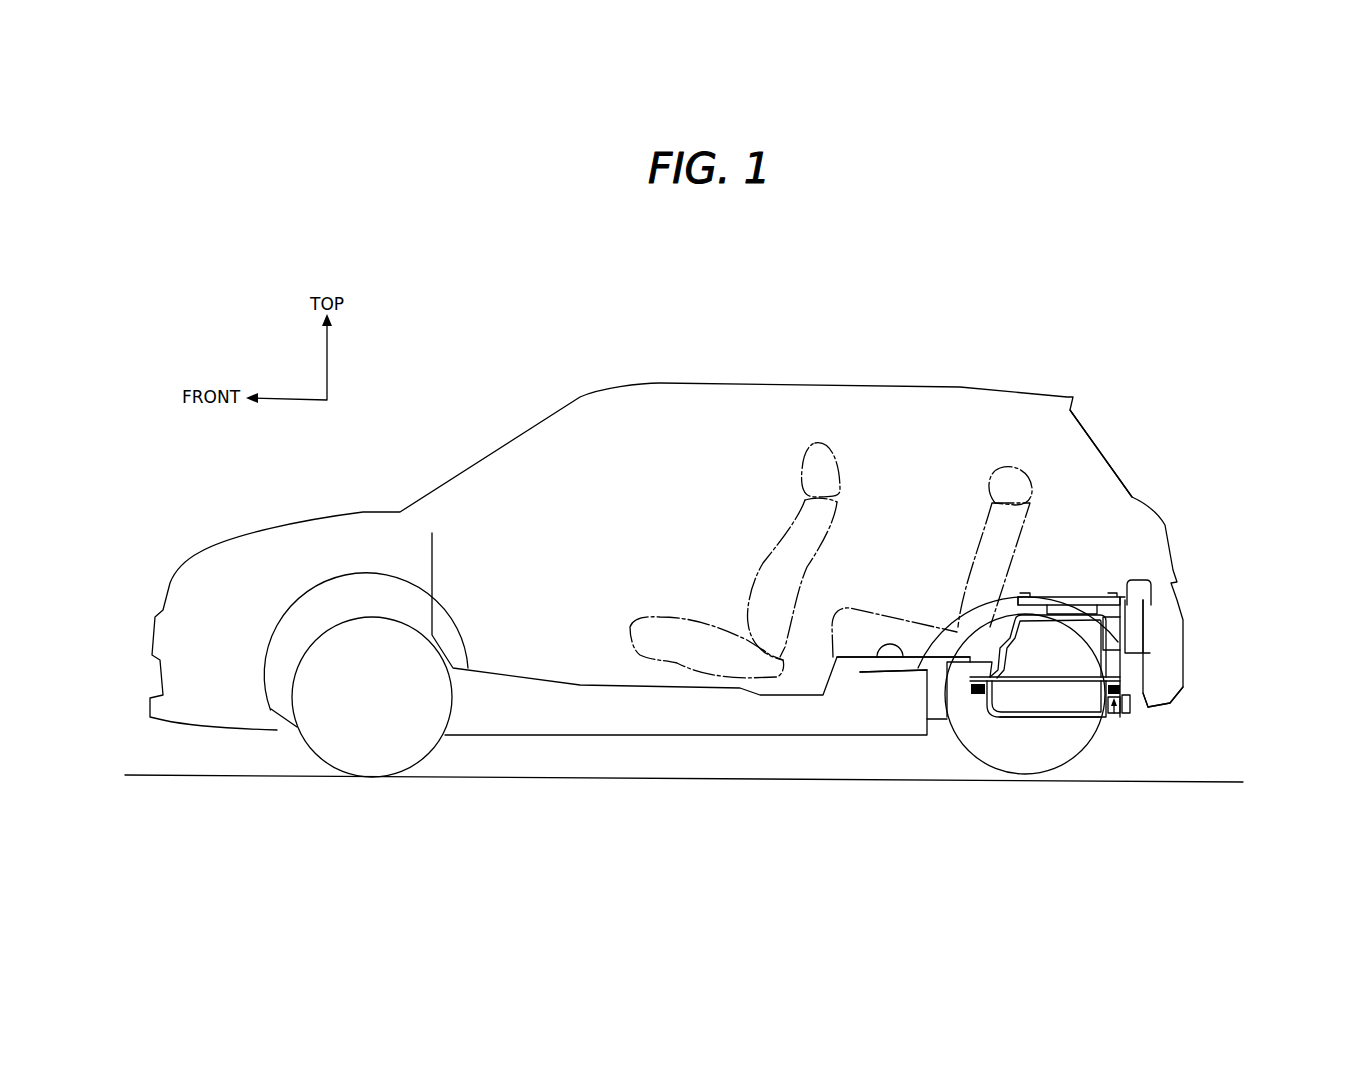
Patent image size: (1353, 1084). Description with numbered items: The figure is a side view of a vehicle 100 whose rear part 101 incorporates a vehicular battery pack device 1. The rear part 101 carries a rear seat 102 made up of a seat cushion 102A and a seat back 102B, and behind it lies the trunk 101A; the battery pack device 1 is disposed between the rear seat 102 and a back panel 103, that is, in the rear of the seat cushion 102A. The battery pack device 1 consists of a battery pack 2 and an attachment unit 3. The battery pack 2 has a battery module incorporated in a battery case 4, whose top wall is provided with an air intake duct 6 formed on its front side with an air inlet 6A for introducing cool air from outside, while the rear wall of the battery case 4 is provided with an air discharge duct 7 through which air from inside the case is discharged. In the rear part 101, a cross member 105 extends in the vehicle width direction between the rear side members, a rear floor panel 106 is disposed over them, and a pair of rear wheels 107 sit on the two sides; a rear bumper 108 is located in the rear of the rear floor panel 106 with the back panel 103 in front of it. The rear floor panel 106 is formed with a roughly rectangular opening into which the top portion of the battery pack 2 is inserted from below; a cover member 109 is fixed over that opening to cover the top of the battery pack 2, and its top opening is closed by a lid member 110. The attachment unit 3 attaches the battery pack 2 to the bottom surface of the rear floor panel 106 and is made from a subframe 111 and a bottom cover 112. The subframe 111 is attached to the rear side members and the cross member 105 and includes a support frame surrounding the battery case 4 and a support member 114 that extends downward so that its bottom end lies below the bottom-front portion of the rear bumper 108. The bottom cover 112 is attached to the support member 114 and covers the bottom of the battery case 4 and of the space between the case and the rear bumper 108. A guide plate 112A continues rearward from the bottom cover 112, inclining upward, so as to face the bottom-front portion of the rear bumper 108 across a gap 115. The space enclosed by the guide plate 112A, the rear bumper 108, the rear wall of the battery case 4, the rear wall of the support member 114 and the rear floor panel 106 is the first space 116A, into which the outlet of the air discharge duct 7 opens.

The battery pack device 1 is at (1052, 748).
The battery pack 2 is at (1020, 710).
The attachment unit 3 is at (956, 694).
The battery case 4 is at (990, 715).
The air intake duct 6 is at (1077, 612).
The air inlet 6A is at (1003, 607).
The air discharge duct 7 is at (1137, 653).
The vehicle 100 is at (833, 328).
The rear part 101 is at (1049, 382).
The trunk 101A is at (1085, 537).
The rear seat 102 is at (966, 545).
The seat cushion 102A is at (860, 568).
The seat back 102B is at (980, 540).
The back panel 103 is at (1143, 673).
The cross member 105 is at (1017, 613).
The rear floor panel 106 is at (865, 660).
The rear wheel 107 is at (975, 765).
The rear bumper 108 is at (1162, 712).
The cover member 109 is at (990, 627).
The lid member 110 is at (1053, 598).
The subframe 111 is at (1110, 720).
The bottom cover 112 is at (1037, 722).
The guide plate 112A is at (1143, 715).
The support member 114 is at (1125, 717).
The gap 115 is at (1147, 700).
The first space 116A is at (1140, 688).